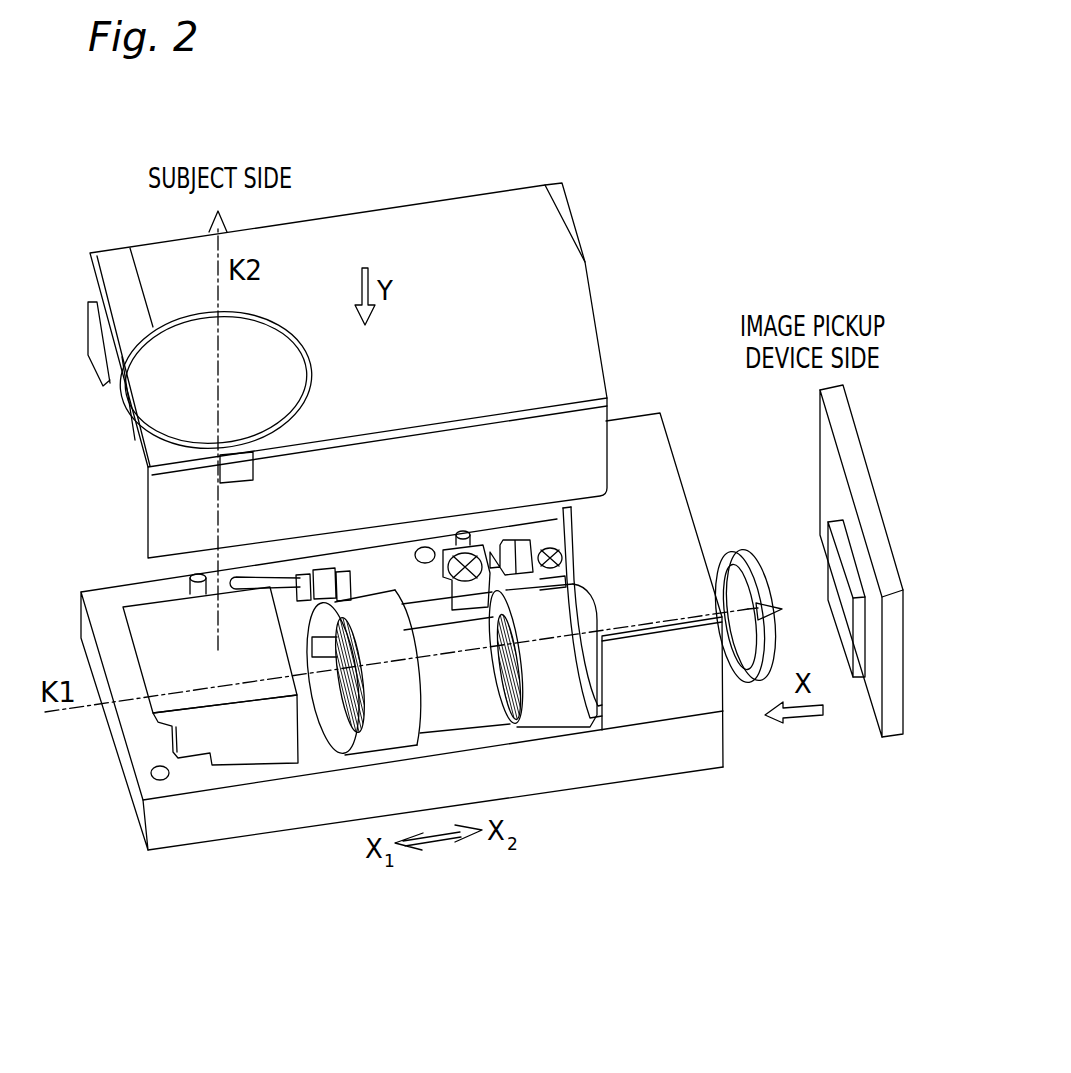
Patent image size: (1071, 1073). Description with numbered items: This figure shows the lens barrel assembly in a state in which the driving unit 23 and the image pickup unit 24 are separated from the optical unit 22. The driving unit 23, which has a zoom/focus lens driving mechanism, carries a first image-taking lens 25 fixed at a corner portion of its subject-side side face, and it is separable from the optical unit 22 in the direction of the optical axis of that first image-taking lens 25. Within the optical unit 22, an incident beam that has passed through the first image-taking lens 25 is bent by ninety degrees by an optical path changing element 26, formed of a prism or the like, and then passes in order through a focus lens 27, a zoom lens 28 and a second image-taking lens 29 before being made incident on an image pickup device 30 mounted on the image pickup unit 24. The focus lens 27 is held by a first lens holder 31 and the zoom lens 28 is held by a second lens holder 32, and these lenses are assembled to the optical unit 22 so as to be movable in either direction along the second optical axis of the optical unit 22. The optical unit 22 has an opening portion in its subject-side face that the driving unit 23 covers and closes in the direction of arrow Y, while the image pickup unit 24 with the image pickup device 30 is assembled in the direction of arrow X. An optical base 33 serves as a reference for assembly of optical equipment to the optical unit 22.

The optical unit 22 is at (339, 857).
The driving unit 23 is at (341, 203).
The image pickup unit 24 is at (845, 415).
The first image-taking lens 25 is at (290, 378).
The optical path changing element 26 is at (150, 617).
The focus lens 27 is at (355, 700).
The zoom lens 28 is at (505, 688).
The second image-taking lens 29 is at (737, 548).
The image pickup device 30 is at (830, 570).
The first lens holder 31 is at (405, 678).
The second lens holder 32 is at (555, 705).
The optical base 33 is at (130, 741).